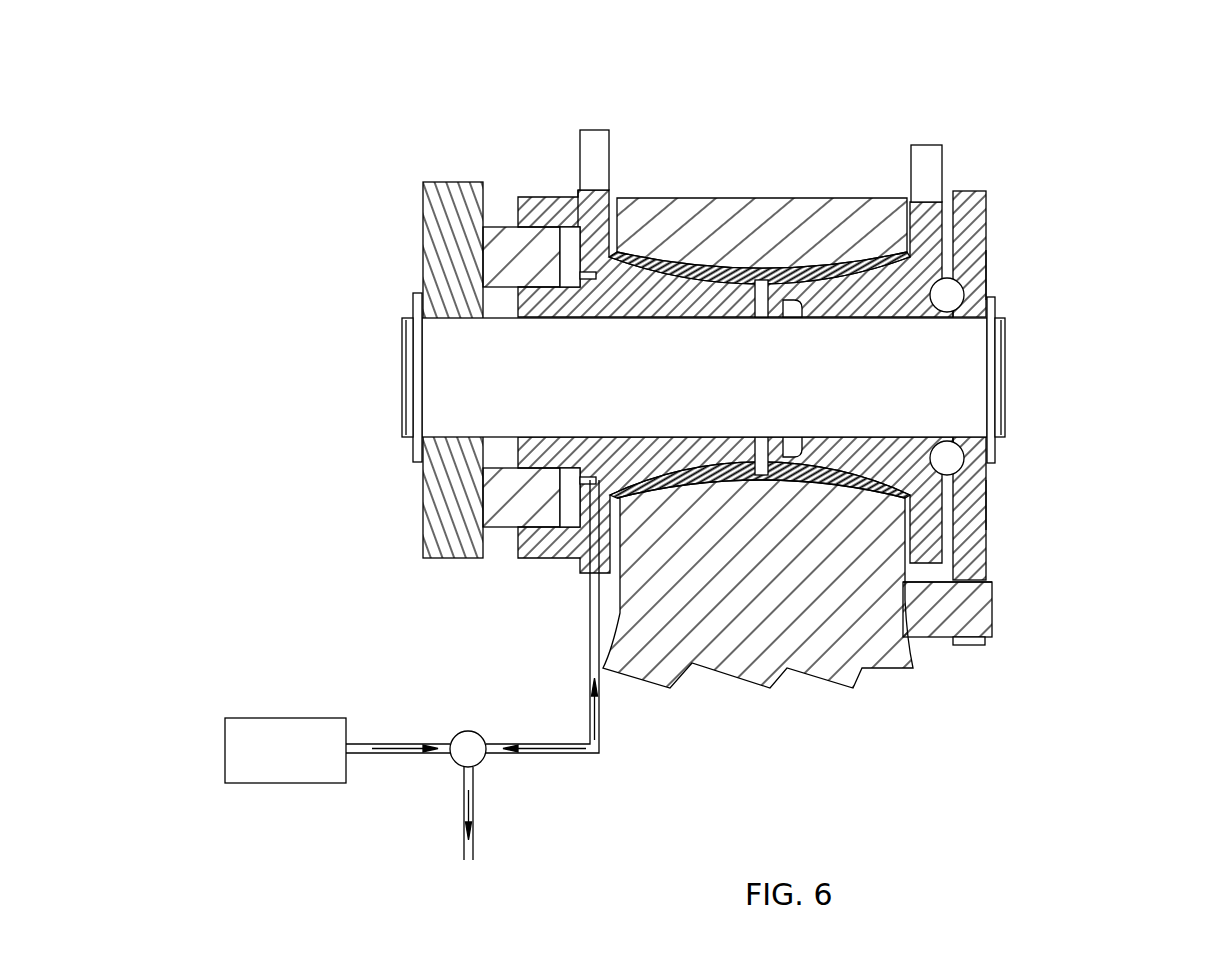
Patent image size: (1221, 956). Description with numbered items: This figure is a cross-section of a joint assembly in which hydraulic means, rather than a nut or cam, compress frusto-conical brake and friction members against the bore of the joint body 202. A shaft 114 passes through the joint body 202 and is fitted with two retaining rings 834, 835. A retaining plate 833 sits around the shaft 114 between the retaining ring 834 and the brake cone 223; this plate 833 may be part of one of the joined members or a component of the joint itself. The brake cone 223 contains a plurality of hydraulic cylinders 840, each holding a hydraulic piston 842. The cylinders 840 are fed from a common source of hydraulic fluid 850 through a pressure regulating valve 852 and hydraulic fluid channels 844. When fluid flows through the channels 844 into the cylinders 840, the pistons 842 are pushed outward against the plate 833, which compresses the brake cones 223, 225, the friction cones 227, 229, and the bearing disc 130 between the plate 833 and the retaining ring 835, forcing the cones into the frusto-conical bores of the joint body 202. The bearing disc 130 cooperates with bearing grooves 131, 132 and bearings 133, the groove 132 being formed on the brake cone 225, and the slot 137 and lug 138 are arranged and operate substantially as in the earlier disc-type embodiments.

The shaft 114 is at (548, 405).
The bearing disc 130 is at (970, 205).
The bearing groove 131 is at (990, 292).
The bearing groove 132 is at (985, 273).
The bearings 133 is at (948, 297).
The slot 137 is at (970, 645).
The lug 138 is at (923, 600).
The joint body 202 is at (773, 220).
The brake cone 223 is at (598, 227).
The brake cone 225 is at (987, 540).
The friction cone 227 is at (657, 257).
The friction cone 229 is at (840, 266).
The retaining plate 833 is at (436, 507).
The retaining ring 834 is at (413, 300).
The retaining ring 835 is at (992, 302).
The hydraulic cylinders 840 is at (562, 257).
The hydraulic piston 842 is at (523, 248).
The hydraulic fluid channels 844 is at (587, 260).
The source of hydraulic fluid 850 is at (288, 750).
The pressure regulating valve 852 is at (472, 751).